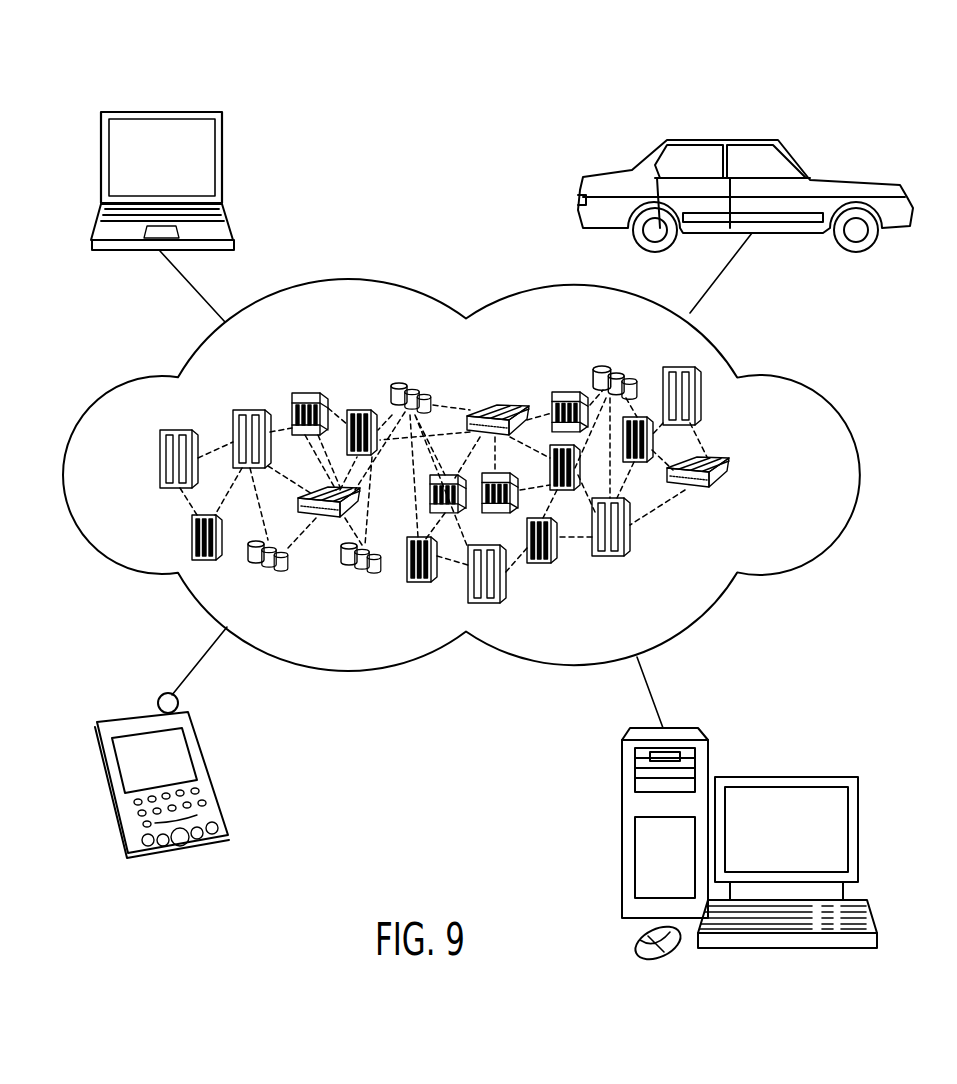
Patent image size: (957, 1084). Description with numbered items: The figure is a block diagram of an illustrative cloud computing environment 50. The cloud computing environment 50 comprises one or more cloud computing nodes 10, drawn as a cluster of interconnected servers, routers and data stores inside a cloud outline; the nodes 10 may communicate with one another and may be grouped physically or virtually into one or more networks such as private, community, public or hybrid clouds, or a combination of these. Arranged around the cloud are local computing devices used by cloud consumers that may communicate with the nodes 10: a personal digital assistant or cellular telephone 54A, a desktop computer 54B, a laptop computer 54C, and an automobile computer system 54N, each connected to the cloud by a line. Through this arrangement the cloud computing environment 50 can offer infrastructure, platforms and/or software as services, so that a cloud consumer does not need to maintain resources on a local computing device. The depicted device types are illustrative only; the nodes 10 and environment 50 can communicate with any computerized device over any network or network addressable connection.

The cloud computing environment 50 is at (800, 378).
The cloud computing node 10 is at (735, 472).
The personal digital assistant or cellular telephone 54A is at (142, 712).
The desktop computer 54B is at (787, 775).
The laptop computer 54C is at (161, 110).
The automobile computer system 54N is at (722, 140).